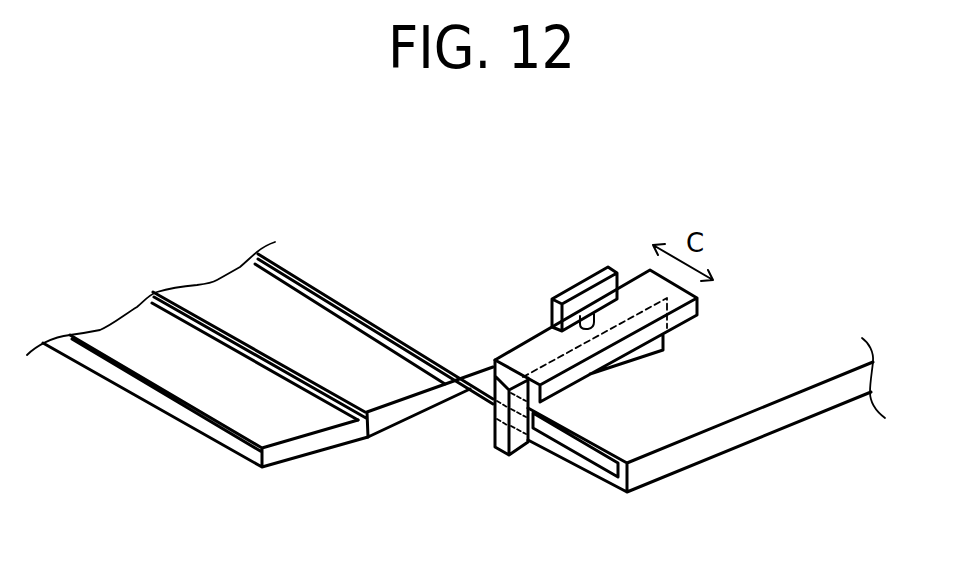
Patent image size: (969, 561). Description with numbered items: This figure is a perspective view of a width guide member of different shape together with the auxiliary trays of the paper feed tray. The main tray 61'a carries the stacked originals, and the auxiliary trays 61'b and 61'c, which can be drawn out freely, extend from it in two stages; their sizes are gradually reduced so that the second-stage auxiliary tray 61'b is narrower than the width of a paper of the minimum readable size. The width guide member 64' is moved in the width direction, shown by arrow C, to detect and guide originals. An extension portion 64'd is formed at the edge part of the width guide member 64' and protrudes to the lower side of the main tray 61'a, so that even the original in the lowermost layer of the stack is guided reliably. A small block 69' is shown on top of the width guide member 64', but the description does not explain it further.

The main tray 61'a is at (570, 384).
The auxiliary tray 61'b is at (322, 405).
The auxiliary tray 61'c is at (205, 436).
The width guide member 64' is at (596, 307).
The extension portion 64'd is at (499, 436).
The engaging projection 69' is at (567, 279).